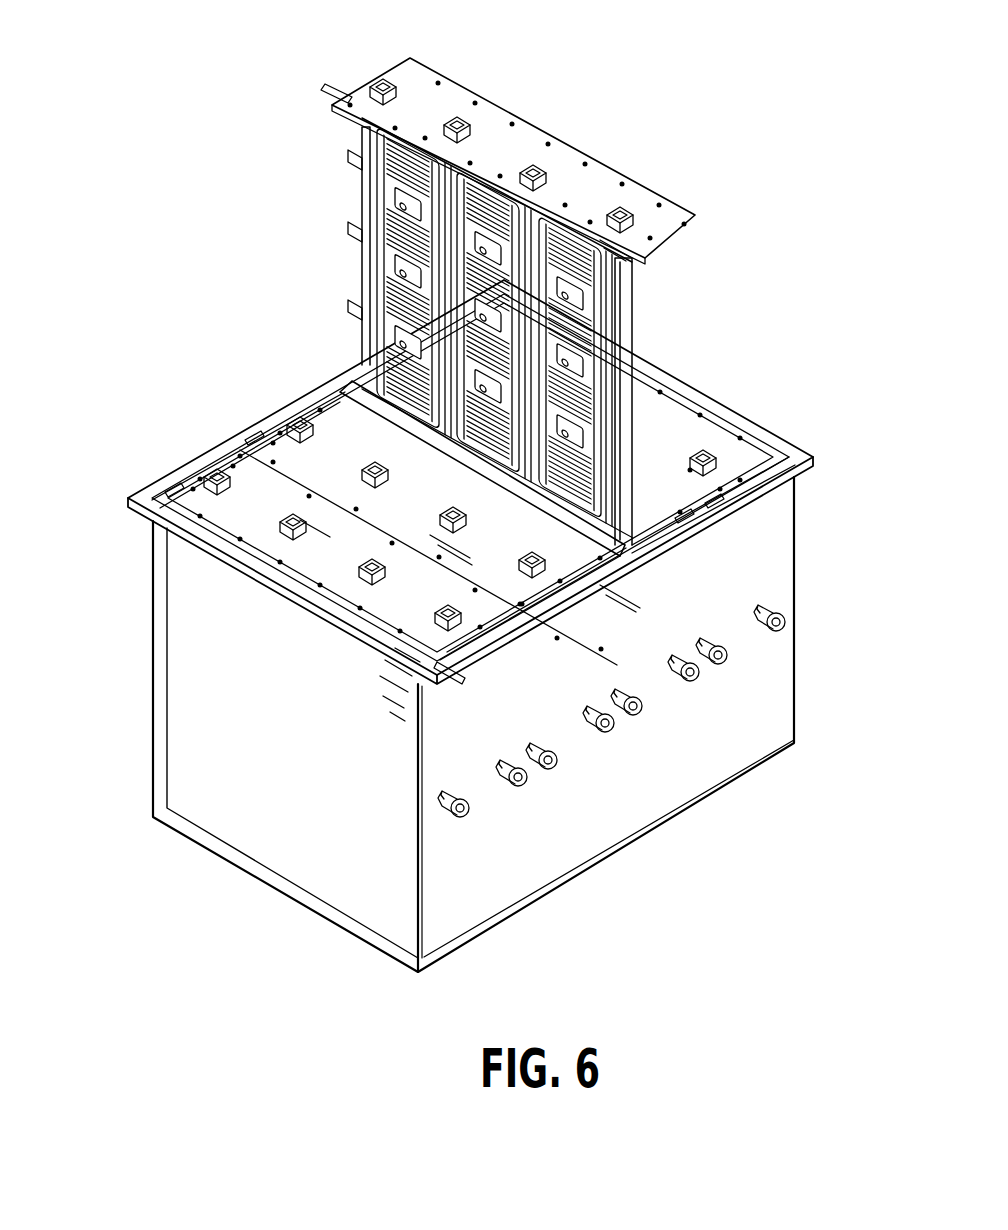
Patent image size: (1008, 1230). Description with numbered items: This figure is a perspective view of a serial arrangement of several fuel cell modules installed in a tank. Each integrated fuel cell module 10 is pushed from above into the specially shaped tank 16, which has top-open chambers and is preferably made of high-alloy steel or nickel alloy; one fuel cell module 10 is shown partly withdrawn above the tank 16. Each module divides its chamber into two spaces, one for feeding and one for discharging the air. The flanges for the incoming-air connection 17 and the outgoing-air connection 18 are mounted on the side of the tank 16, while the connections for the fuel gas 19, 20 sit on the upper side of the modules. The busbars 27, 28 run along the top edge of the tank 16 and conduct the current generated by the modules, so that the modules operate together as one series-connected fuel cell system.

The fuel cell module 10 is at (622, 313).
The tank 16 is at (773, 582).
The incoming-air connection 17 is at (694, 674).
The outgoing-air connection 18 is at (722, 660).
The fuel gas connection 19 is at (457, 127).
The fuel gas connection 20 is at (379, 84).
The busbar 27 is at (793, 480).
The busbar 28 is at (140, 492).